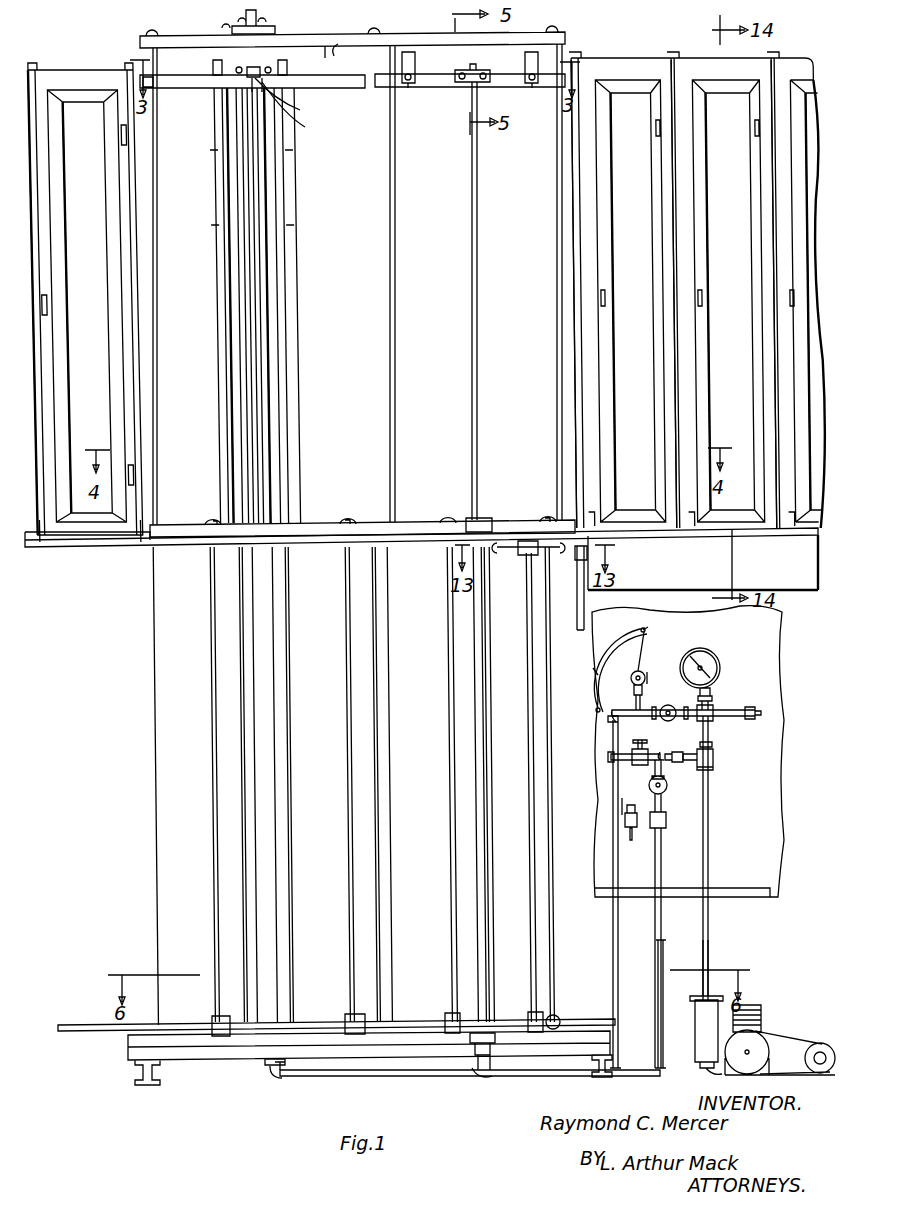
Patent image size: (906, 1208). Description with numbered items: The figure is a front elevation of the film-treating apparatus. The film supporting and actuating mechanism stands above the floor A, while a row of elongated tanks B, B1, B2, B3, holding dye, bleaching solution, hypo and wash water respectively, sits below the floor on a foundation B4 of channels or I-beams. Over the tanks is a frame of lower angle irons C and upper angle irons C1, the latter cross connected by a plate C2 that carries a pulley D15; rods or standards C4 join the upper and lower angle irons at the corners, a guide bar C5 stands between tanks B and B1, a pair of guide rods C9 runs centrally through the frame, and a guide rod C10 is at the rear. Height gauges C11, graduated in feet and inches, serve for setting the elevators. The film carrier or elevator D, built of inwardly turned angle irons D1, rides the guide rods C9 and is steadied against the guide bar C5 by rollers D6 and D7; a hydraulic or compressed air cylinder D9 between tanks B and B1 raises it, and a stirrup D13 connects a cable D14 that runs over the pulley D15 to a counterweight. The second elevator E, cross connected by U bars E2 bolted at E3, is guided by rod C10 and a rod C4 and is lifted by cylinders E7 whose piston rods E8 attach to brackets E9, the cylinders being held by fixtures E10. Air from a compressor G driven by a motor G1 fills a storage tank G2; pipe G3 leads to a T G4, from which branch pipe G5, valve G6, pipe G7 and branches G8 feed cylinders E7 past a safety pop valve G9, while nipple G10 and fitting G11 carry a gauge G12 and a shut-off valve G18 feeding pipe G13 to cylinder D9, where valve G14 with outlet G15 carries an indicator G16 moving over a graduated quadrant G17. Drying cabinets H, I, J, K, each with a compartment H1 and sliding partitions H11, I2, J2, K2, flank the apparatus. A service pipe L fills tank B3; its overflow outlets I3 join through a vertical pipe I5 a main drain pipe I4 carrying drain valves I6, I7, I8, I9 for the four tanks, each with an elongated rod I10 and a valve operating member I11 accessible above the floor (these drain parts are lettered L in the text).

The floor A is at (106, 547).
The tank B is at (172, 786).
The tank B1 is at (284, 784).
The tank B2 is at (398, 784).
The wash tank B3 is at (500, 784).
The foundation B4 is at (204, 1059).
The angle irons C is at (308, 530).
The angle irons C1 is at (338, 50).
The plate C2 is at (268, 36).
The rods or standards C4 is at (158, 136).
The guide bar C5 is at (258, 203).
The guide rods C9 is at (218, 168).
The guide rod C10 is at (396, 232).
The height gauges C11 is at (226, 340).
The film carrier or elevator D is at (214, 95).
The angle irons D1 is at (213, 67).
The rollers D6 is at (262, 76).
The roller D7 is at (300, 110).
The hydraulic or compressed air cylinder D9 is at (265, 801).
The stirrup D13 is at (305, 127).
The cable D14 is at (288, 62).
The pulley D15 is at (238, 18).
The second elevator E is at (451, 70).
The U bars E2 is at (525, 60).
The bolts E3 is at (408, 86).
The hydraulic or compressed air cylinders E7 is at (482, 632).
The piston rods E8 is at (478, 228).
The brackets E9 is at (462, 84).
The fixtures E10 is at (482, 520).
The compressor G is at (750, 1044).
The motor G1 is at (822, 1044).
The storage tank G2 is at (700, 1045).
The pipe G3 is at (709, 826).
The T G4 is at (713, 756).
The branch pipe G5 is at (678, 762).
The valve G6 is at (668, 788).
The pipe G7 is at (665, 946).
The branches G8 is at (556, 1076).
The safety pop valve G9 is at (648, 750).
The nipple G10 is at (712, 735).
The fitting G11 is at (688, 751).
The gauge G12 is at (712, 652).
The pipe G13 is at (620, 866).
The valve G14 is at (640, 674).
The outlet G15 is at (652, 672).
The indicator G16 is at (632, 660).
The graduated quadrant G17 is at (592, 672).
The shut-off valve G18 is at (682, 699).
The drying cabinet H is at (101, 238).
The compartment H1 is at (122, 266).
The sliding partitions H11 is at (38, 412).
The drying cabinet I is at (630, 301).
The sliding partition I2 is at (582, 326).
The overflow outlets I3 is at (518, 556).
The main drain pipe I4 is at (70, 1024).
The vertical pipe I5 is at (529, 802).
The drain valve I6 is at (226, 1036).
The drain valve I7 is at (350, 1018).
The drain valve I8 is at (450, 1033).
The drain valve I9 is at (560, 1020).
The elongated rod I10 is at (213, 600).
The valve operating member I11 is at (212, 523).
The drying cabinet J is at (728, 301).
The sliding partition J2 is at (680, 333).
The drying cabinet K is at (800, 228).
The sliding partition K2 is at (776, 374).
The service pipe L is at (590, 622).